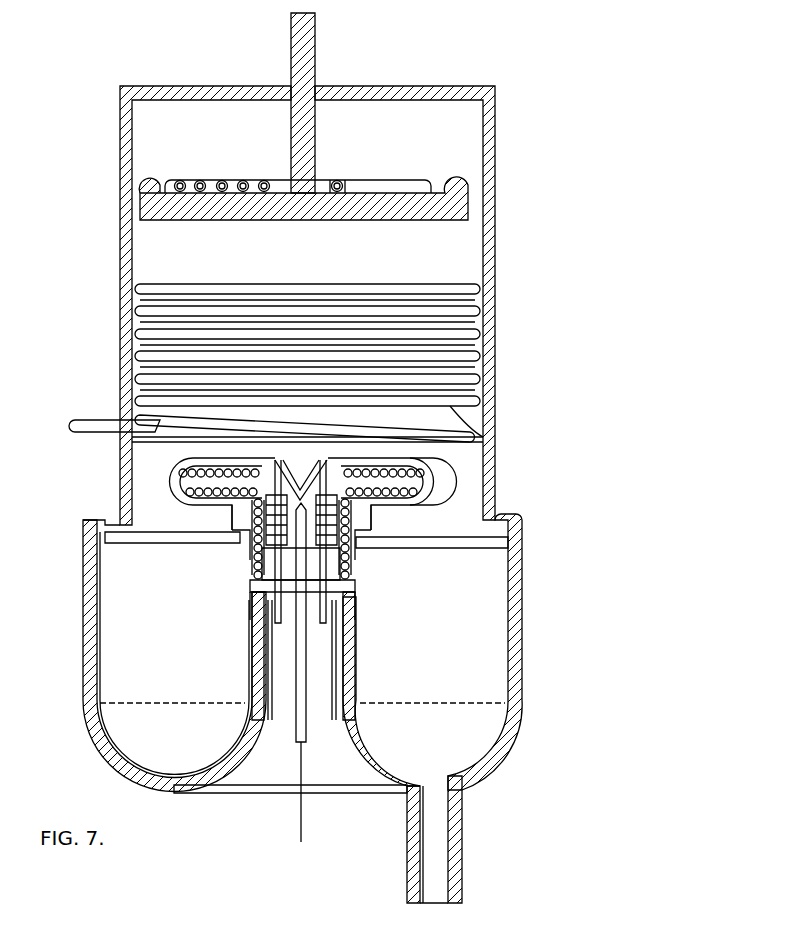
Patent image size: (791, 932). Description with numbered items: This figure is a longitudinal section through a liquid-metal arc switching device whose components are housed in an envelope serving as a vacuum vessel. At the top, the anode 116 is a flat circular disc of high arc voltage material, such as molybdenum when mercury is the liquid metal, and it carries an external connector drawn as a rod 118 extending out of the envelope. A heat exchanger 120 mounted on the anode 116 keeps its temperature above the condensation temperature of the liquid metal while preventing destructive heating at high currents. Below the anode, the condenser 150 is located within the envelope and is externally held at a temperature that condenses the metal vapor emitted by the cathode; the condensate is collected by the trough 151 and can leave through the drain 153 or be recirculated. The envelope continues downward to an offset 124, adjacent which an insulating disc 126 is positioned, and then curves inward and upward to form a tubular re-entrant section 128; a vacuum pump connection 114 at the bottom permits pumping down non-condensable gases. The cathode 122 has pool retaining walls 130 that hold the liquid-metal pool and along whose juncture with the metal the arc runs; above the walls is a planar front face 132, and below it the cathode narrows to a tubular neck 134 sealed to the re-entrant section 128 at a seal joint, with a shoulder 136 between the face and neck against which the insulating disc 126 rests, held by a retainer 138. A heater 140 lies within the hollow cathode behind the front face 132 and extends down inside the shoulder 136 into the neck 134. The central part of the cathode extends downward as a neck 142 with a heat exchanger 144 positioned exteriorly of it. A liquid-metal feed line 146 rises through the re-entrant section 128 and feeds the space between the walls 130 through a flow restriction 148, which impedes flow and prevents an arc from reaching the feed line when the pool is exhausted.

The vacuum pump connection 114 is at (458, 832).
The anode 116 is at (470, 198).
The support rod 118 is at (303, 57).
The heat exchanger 120 is at (395, 184).
The cathode 122 is at (451, 484).
The offset 124 is at (85, 527).
The insulating disc 126 is at (137, 537).
The tubular re-entrant section 128 is at (355, 660).
The pool retaining walls 130 is at (282, 472).
The front face 132 is at (418, 468).
The tubular neck 134 is at (353, 588).
The shoulder 136 is at (240, 527).
The retainer 138 is at (277, 548).
The heater 140 is at (410, 500).
The neck 142 is at (258, 605).
The heat exchanger 144 is at (293, 568).
The liquid-metal feed line 146 is at (297, 722).
The flow restriction 148 is at (322, 478).
The condenser 150 is at (132, 334).
The trough 151 is at (128, 441).
The drain 153 is at (92, 428).